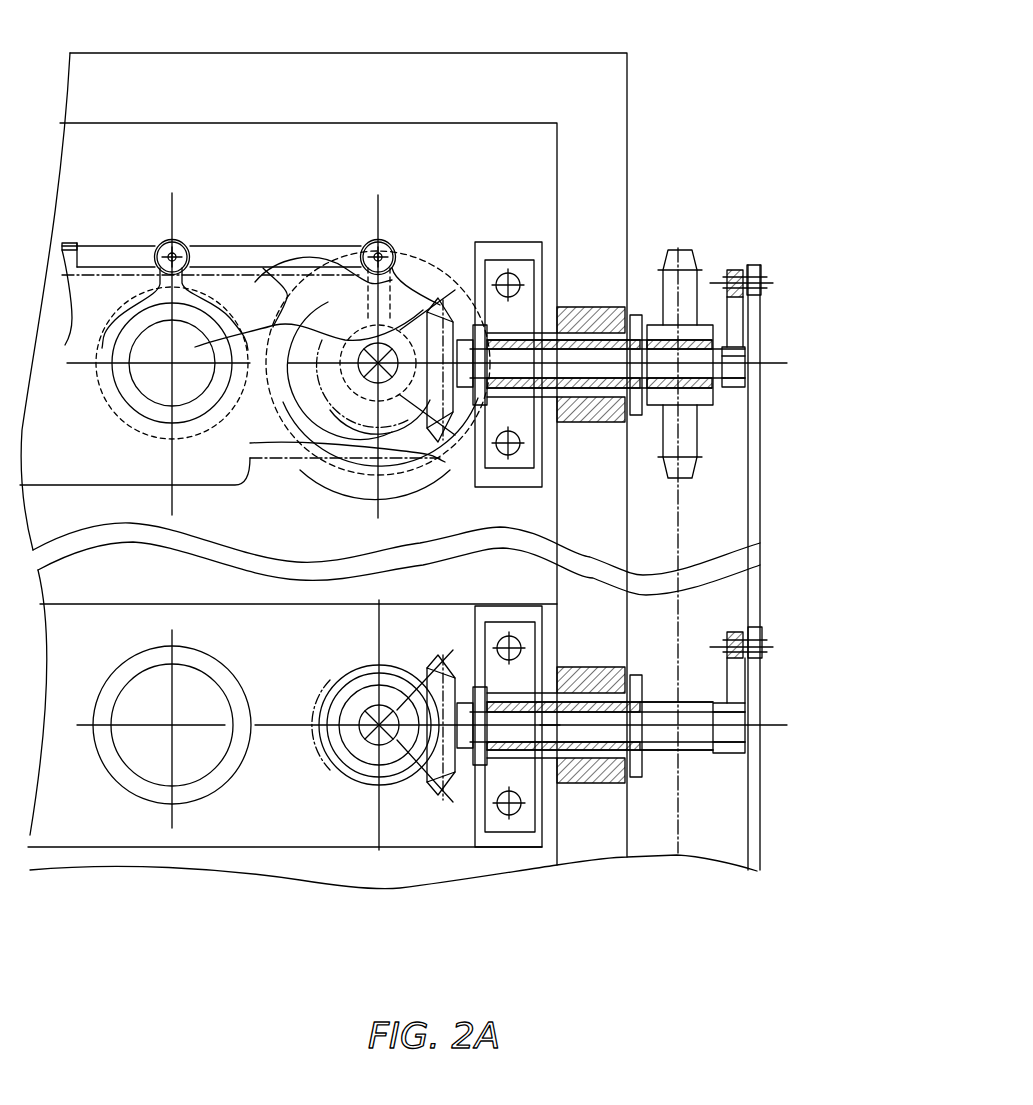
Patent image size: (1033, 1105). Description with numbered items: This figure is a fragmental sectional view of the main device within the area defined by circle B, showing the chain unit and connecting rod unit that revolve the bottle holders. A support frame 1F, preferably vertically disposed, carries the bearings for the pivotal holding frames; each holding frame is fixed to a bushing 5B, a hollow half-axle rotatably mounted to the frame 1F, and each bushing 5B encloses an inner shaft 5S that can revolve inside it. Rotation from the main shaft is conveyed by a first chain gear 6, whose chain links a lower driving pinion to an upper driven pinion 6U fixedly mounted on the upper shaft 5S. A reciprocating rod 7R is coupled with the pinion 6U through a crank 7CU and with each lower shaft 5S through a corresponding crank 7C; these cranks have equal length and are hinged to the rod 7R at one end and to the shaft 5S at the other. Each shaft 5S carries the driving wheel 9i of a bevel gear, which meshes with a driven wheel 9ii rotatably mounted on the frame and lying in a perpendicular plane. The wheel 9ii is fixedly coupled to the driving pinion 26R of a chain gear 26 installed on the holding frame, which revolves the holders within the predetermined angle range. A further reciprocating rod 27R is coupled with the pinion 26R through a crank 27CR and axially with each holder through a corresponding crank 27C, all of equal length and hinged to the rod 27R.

The circle B is at (324, 435).
The support frame 1F is at (590, 223).
The chain gear 26 is at (237, 277).
The driving pinion 26R is at (367, 463).
The crank 27C is at (147, 302).
The reciprocating rod 27R is at (233, 262).
The crank 27CR is at (353, 307).
The driving wheel 9i is at (445, 292).
The driven wheel 9ii is at (307, 440).
The bushing 5B is at (567, 395).
The inner shaft 5S is at (717, 362).
The upper pinion 6U is at (710, 260).
The first chain gear 6 is at (678, 793).
The reciprocating rod 7R is at (757, 418).
The crank 7CU is at (737, 319).
The crank 7C is at (735, 688).